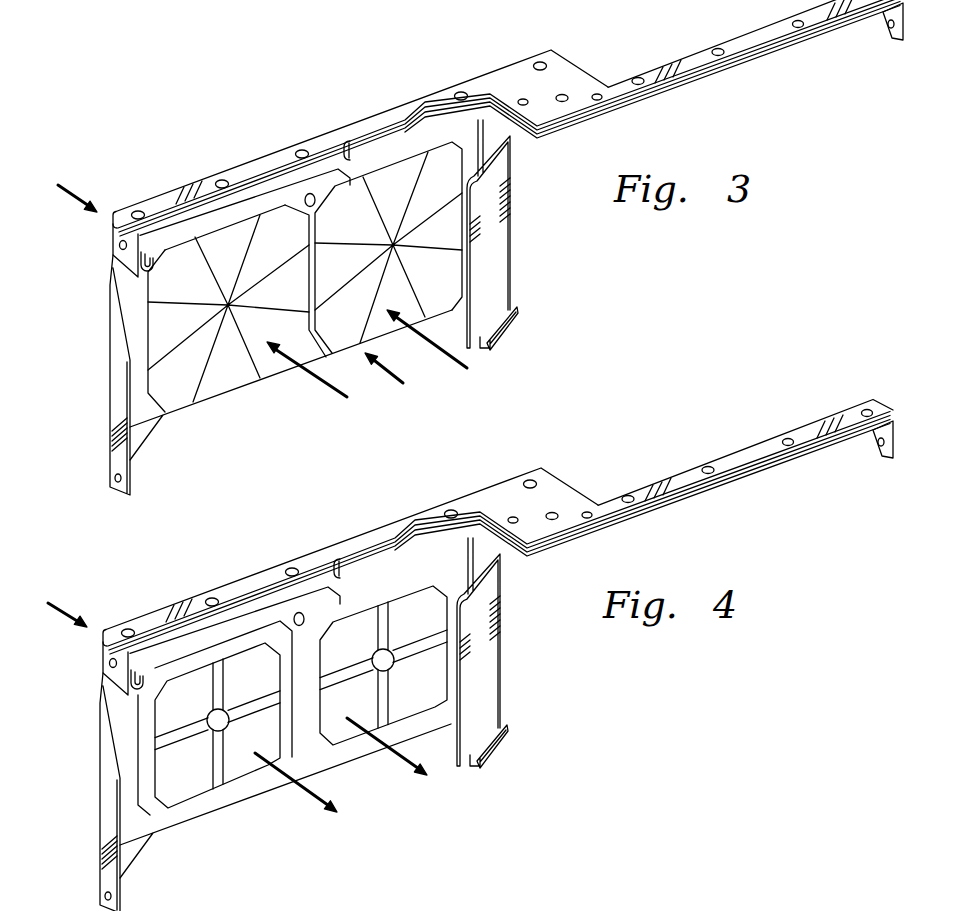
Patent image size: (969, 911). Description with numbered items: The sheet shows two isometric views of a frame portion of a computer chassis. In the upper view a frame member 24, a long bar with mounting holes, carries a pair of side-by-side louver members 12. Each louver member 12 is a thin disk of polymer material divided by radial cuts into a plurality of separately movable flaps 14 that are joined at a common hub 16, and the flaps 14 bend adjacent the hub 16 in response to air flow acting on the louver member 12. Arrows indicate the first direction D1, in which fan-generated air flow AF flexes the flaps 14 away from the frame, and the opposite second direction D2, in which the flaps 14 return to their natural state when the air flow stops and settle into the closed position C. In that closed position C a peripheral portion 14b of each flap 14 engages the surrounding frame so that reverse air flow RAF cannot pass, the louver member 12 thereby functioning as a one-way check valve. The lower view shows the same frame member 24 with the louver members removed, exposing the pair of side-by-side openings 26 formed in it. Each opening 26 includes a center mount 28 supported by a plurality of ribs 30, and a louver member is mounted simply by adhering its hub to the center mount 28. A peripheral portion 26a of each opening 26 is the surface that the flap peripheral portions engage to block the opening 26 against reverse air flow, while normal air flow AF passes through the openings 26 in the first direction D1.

In FIG. 3, the louver member 12 is at (445, 271).
In FIG. 4, the louver member 12 is at (431, 688).
In FIG. 3, the flaps 14 is at (173, 263).
In FIG. 3, the peripheral portion of flap 14b is at (232, 233).
In FIG. 3, the hub 16 is at (418, 237).
In FIG. 3, the frame member 24 is at (570, 77).
In FIG. 4, the frame member 24 is at (558, 497).
In FIG. 4, the opening 26 is at (418, 590).
In FIG. 4, the peripheral portion of opening 26a is at (187, 653).
In FIG. 4, the center mount 28 is at (225, 732).
In FIG. 4, the ribs 30 is at (223, 686).
In FIG. 3, the closed position C is at (344, 160).
In FIG. 4, the closed position C is at (372, 597).
In FIG. 3, the first direction D1 is at (72, 197).
In FIG. 4, the first direction D1 is at (60, 620).
In FIG. 3, the second direction D2 is at (380, 383).
In FIG. 3, the reverse air flow RAF is at (325, 392).
In FIG. 4, the air flow AF is at (310, 800).